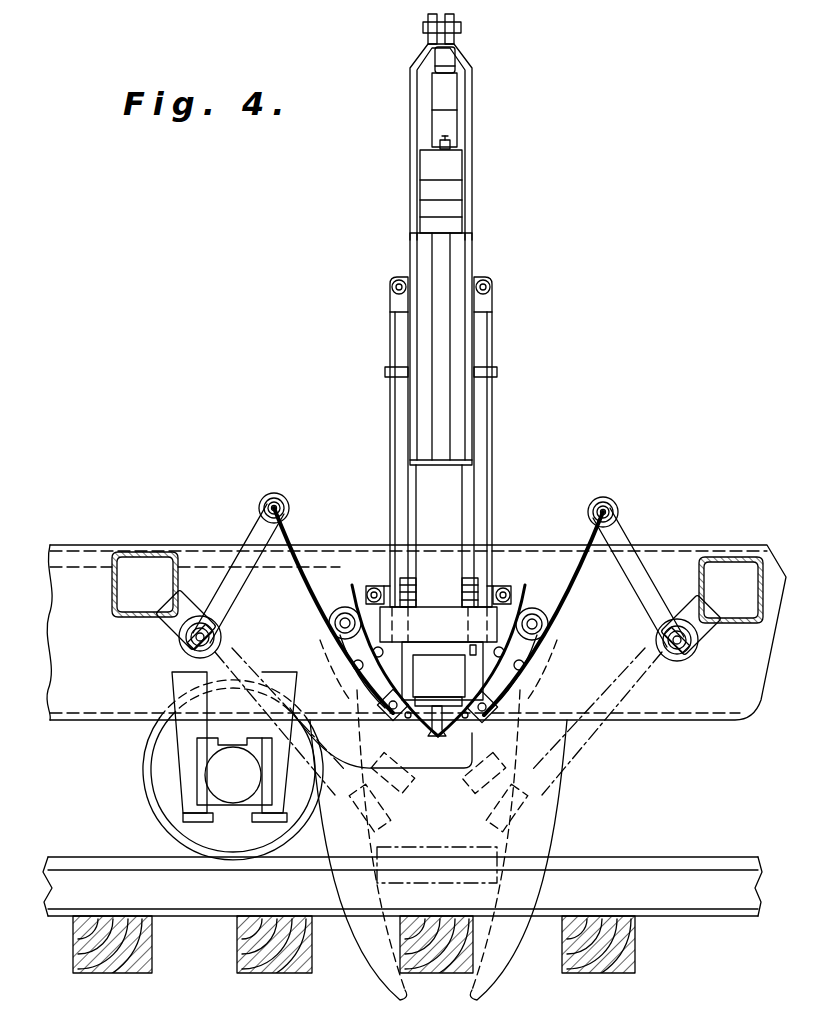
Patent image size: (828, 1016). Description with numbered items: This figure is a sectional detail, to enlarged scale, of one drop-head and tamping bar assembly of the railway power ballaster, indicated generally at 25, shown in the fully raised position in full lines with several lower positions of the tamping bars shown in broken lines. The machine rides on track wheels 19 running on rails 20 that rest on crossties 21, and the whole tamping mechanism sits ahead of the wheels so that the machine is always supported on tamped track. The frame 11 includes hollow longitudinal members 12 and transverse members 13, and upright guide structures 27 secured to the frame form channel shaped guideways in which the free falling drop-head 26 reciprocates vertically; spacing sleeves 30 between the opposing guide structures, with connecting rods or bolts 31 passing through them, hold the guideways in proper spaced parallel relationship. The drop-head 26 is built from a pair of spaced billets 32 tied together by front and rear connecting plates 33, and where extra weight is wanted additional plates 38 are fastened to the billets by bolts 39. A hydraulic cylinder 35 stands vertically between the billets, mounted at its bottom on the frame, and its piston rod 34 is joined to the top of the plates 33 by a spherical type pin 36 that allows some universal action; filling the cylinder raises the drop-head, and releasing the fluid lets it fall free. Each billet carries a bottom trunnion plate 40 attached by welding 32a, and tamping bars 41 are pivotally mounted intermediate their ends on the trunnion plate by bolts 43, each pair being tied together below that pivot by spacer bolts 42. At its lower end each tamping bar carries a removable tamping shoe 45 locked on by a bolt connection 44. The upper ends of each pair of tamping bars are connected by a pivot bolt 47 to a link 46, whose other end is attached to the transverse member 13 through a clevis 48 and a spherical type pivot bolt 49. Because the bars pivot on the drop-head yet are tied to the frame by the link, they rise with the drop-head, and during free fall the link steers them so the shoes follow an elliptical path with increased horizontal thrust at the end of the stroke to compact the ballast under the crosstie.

The frame 11 is at (692, 722).
The hollow longitudinal member 12 is at (120, 698).
The transverse member 13 is at (135, 552).
The track wheel 19 is at (150, 822).
The rail 20 is at (662, 852).
The crosstie 21 is at (440, 978).
The drop-head and tamping mechanism 25 is at (498, 417).
The drop-head 26 is at (473, 212).
The upright guide structure 27 is at (492, 300).
The spacing sleeve 30 is at (399, 282).
The connecting rod or bolt 31 is at (393, 303).
The billet 32 is at (455, 348).
The welding 32a is at (420, 590).
The connecting plate 33 is at (411, 81).
The piston rod 34 is at (455, 58).
The hydraulic cylinder 35 is at (452, 120).
The spherical type pin 36 is at (461, 27).
The additional plate 38 is at (430, 172).
The bolt 39 is at (450, 146).
The trunnion plate 40 is at (447, 618).
The tamping bar 41 is at (303, 573).
The spacer bolt 42 is at (363, 683).
The bolt 43 is at (340, 632).
The bolt connection 44 is at (396, 713).
The tamping shoe 45 is at (431, 735).
The link 46 is at (246, 545).
The pivot bolt 47 is at (273, 493).
The clevis 48 is at (172, 630).
The spherical type pivot bolt 49 is at (180, 650).